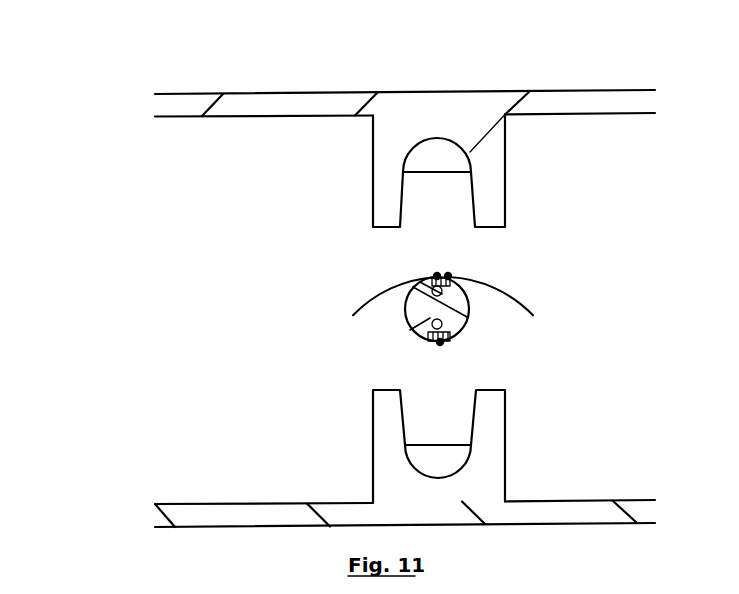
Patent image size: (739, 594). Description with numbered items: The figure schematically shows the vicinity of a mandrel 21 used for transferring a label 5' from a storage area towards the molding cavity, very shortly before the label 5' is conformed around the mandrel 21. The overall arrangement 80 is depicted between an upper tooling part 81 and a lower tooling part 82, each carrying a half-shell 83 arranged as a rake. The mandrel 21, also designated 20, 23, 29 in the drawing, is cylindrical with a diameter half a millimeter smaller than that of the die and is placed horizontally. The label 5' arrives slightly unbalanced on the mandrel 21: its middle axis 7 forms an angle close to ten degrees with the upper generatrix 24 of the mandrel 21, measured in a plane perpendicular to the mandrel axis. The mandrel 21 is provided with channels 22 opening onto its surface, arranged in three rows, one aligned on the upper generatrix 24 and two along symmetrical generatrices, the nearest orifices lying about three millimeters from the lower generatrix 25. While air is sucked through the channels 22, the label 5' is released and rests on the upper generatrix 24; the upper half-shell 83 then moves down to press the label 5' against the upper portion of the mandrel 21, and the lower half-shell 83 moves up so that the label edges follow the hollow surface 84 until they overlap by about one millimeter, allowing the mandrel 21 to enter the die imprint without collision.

The coupling assembly 80 is at (131, 377).
The upper fork member 81 is at (481, 133).
The lower fork member 82 is at (441, 446).
The half-shell 83 is at (422, 145).
The hollow surface 84 is at (457, 468).
The label 5' is at (465, 281).
The middle axis 7 is at (448, 275).
The ball element 20 is at (320, 311).
The mandrel 21 is at (320, 311).
The ball element 23 is at (320, 311).
The ball element 29 is at (423, 303).
The channels 22 is at (470, 306).
The upper generatrix 24 is at (437, 276).
The lower generatrix 25 is at (440, 342).